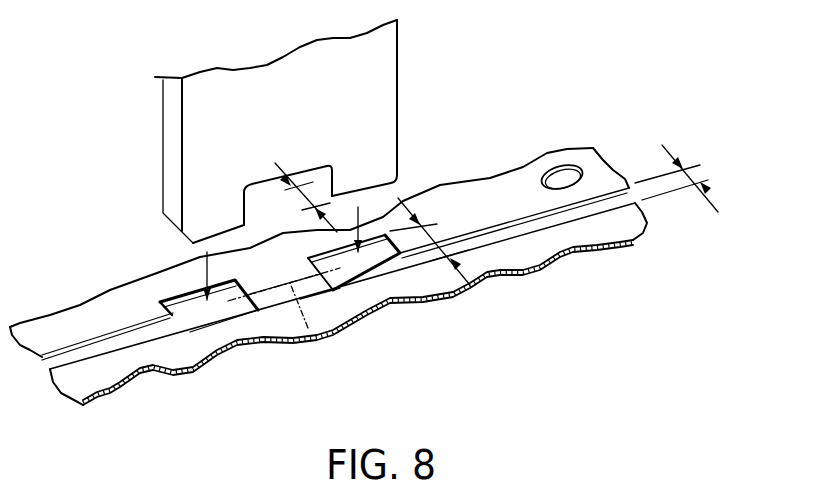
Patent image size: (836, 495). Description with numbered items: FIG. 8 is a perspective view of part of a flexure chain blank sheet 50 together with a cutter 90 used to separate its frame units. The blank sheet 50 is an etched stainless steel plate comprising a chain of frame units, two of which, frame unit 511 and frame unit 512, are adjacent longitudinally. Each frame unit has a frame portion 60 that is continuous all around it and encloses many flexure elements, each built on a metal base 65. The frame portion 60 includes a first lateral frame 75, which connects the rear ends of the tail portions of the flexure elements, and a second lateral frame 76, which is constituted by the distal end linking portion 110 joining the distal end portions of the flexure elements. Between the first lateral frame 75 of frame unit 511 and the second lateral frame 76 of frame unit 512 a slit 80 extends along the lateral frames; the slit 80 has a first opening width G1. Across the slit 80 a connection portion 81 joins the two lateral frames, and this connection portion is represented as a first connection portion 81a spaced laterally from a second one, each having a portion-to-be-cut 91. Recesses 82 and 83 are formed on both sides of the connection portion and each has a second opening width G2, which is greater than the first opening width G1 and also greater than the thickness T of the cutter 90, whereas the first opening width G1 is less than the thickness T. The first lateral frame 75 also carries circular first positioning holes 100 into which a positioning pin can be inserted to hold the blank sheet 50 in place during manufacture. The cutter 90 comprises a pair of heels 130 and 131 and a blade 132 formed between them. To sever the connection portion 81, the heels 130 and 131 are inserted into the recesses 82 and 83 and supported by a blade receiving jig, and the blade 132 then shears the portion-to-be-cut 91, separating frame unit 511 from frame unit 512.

The flexure chain blank sheet 50 is at (348, 339).
The frame portion 60 is at (320, 248).
The metal base 65 is at (514, 179).
The first lateral frame 75 is at (43, 318).
The second lateral frame 76 is at (107, 397).
The slit 80 is at (481, 240).
The connection portion 81 is at (327, 298).
The first connection portion 81a is at (263, 283).
The recess 82 is at (380, 262).
The recess 83 is at (222, 310).
The cutter 90 is at (277, 131).
The portion-to-be-cut 91 is at (308, 328).
The first positioning hole 100 is at (562, 166).
The distal end linking portion 110 is at (212, 340).
The heel 130 is at (386, 163).
The heel 131 is at (193, 214).
The blade 132 is at (273, 184).
The frame unit 511 is at (78, 302).
The frame unit 512 is at (157, 377).
The thickness of the cutter T is at (302, 200).
The first opening width G1 is at (692, 170).
The second opening width G2 is at (428, 226).